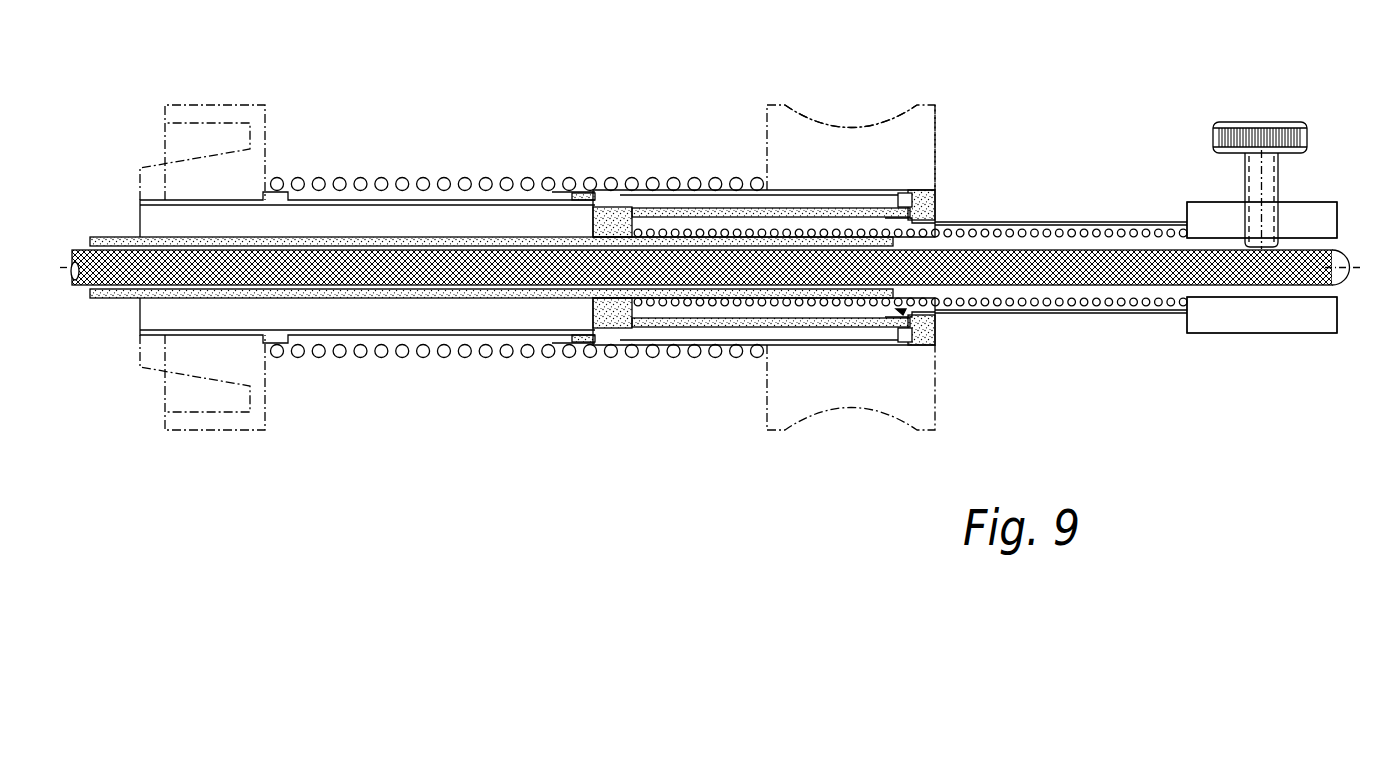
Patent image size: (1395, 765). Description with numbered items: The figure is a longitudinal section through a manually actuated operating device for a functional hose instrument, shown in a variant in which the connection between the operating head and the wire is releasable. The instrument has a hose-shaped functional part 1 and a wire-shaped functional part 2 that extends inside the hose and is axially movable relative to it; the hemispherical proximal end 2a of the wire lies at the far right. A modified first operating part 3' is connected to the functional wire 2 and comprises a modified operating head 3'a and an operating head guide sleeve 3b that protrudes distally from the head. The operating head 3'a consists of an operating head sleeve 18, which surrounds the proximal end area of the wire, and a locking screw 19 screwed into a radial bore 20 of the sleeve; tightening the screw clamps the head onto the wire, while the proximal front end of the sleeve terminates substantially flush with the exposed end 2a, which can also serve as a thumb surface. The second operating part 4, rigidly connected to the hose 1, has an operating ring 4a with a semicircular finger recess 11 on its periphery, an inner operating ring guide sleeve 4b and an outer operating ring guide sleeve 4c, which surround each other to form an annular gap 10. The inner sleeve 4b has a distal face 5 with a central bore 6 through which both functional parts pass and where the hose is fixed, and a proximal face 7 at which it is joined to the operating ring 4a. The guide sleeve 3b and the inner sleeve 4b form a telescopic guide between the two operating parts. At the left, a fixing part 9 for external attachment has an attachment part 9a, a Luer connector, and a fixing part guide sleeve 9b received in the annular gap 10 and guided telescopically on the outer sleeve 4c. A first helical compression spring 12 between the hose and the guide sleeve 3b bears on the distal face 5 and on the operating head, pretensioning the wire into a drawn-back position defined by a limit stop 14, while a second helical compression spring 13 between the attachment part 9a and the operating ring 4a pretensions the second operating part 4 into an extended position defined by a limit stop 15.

The hose-shaped functional part 1 is at (394, 200).
The wire-shaped functional part 2 is at (410, 270).
The proximal end 2a is at (1341, 250).
The modified first operating part 3' is at (1225, 209).
The modified operating head 3'a is at (1284, 172).
The operating head guide sleeve 3b is at (1081, 315).
The second operating part 4 is at (758, 156).
The operating ring 4a is at (936, 151).
The operating ring guide sleeve 4b is at (704, 327).
The outer operating ring guide sleeve 4c is at (754, 346).
The distal face 5 is at (625, 222).
The central bore 6 is at (632, 298).
The proximal face 7 is at (925, 328).
The fixing part 9 is at (289, 160).
The attachment part 9a is at (246, 426).
The fixing part guide sleeve 9b is at (492, 200).
The annular gap 10 is at (672, 341).
The recess 11 is at (893, 122).
The first helical compression spring 12 is at (1040, 232).
The second helical compression spring 13 is at (508, 356).
The limit stop 14 is at (899, 318).
The limit stop 15 is at (600, 350).
The operating head sleeve 18 is at (1237, 331).
The locking screw 19 is at (1262, 133).
The radial bore 20 is at (1250, 210).